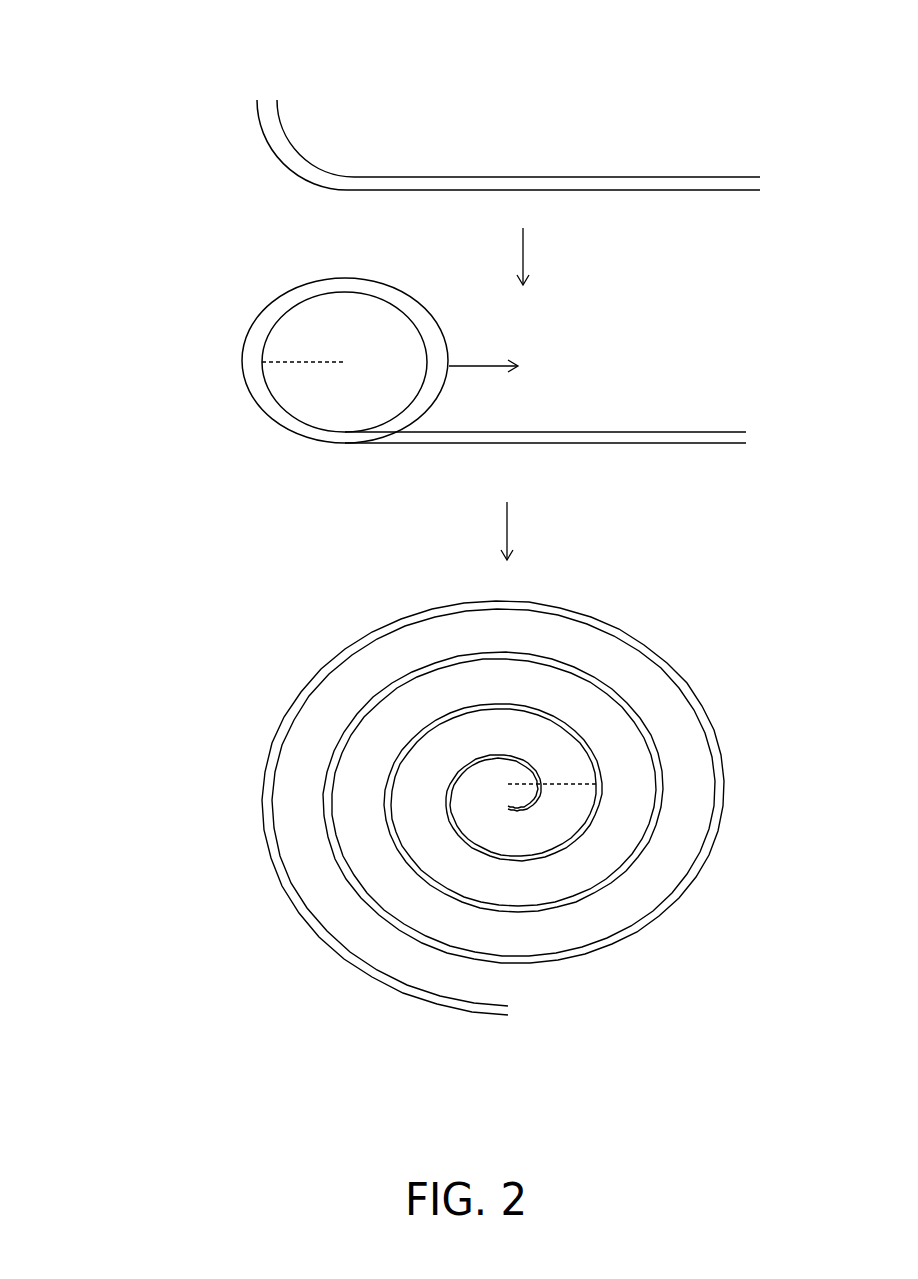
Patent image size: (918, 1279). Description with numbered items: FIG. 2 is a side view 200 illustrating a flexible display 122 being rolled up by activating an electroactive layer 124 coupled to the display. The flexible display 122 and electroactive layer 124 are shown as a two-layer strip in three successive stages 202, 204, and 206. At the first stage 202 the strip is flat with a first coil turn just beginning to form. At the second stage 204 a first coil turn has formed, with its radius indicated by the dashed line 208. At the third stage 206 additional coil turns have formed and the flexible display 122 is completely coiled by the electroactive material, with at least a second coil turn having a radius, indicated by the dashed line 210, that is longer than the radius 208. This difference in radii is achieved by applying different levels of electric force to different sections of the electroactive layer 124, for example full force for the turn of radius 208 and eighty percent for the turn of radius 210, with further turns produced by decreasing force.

The method of forming a coiled structure 200 is at (483, 1165).
The first stage 202 is at (209, 41).
The second stage 204 is at (126, 302).
The third stage 206 is at (153, 636).
The flexible display 122 is at (728, 177).
The electroactive layer 124 is at (692, 190).
The radius of first coil turn 208 is at (297, 360).
The radius of second coil turn 210 is at (565, 788).